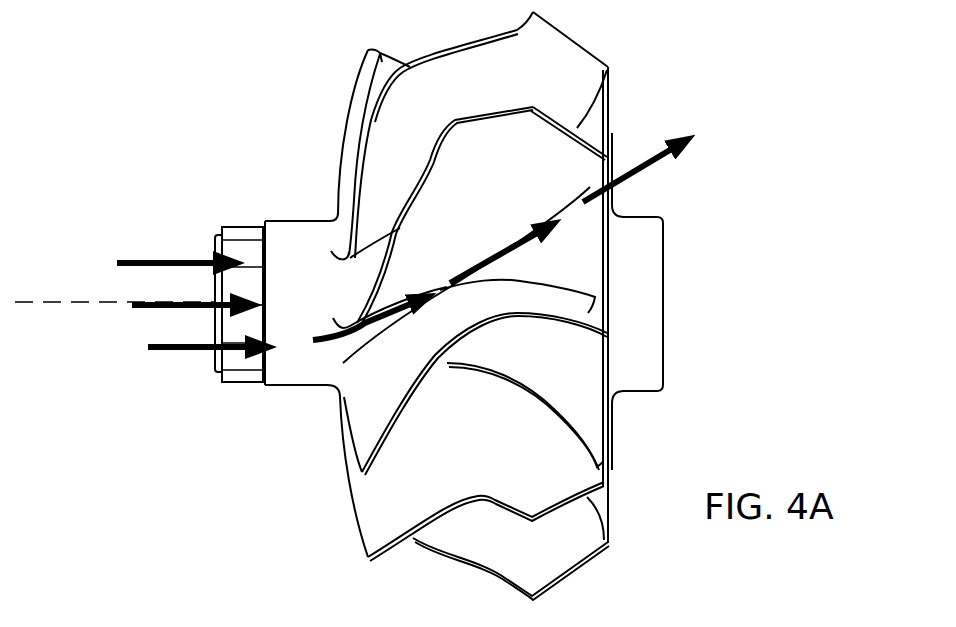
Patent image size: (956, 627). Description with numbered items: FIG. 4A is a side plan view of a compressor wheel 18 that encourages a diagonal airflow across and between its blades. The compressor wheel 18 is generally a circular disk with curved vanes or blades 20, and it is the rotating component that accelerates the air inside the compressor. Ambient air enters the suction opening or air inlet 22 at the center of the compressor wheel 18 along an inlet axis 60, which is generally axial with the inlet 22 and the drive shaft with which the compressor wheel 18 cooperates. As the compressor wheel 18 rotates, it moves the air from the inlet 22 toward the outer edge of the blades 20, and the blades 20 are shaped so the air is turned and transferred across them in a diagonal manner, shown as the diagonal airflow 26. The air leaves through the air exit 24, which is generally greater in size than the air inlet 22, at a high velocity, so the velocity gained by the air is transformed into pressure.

The compressor wheel 18 is at (500, 450).
The blades 20 is at (497, 155).
The air inlet 22 is at (232, 230).
The air exit 24 is at (660, 91).
The diagonal airflow 26 is at (640, 173).
The inlet axis 60 is at (55, 302).